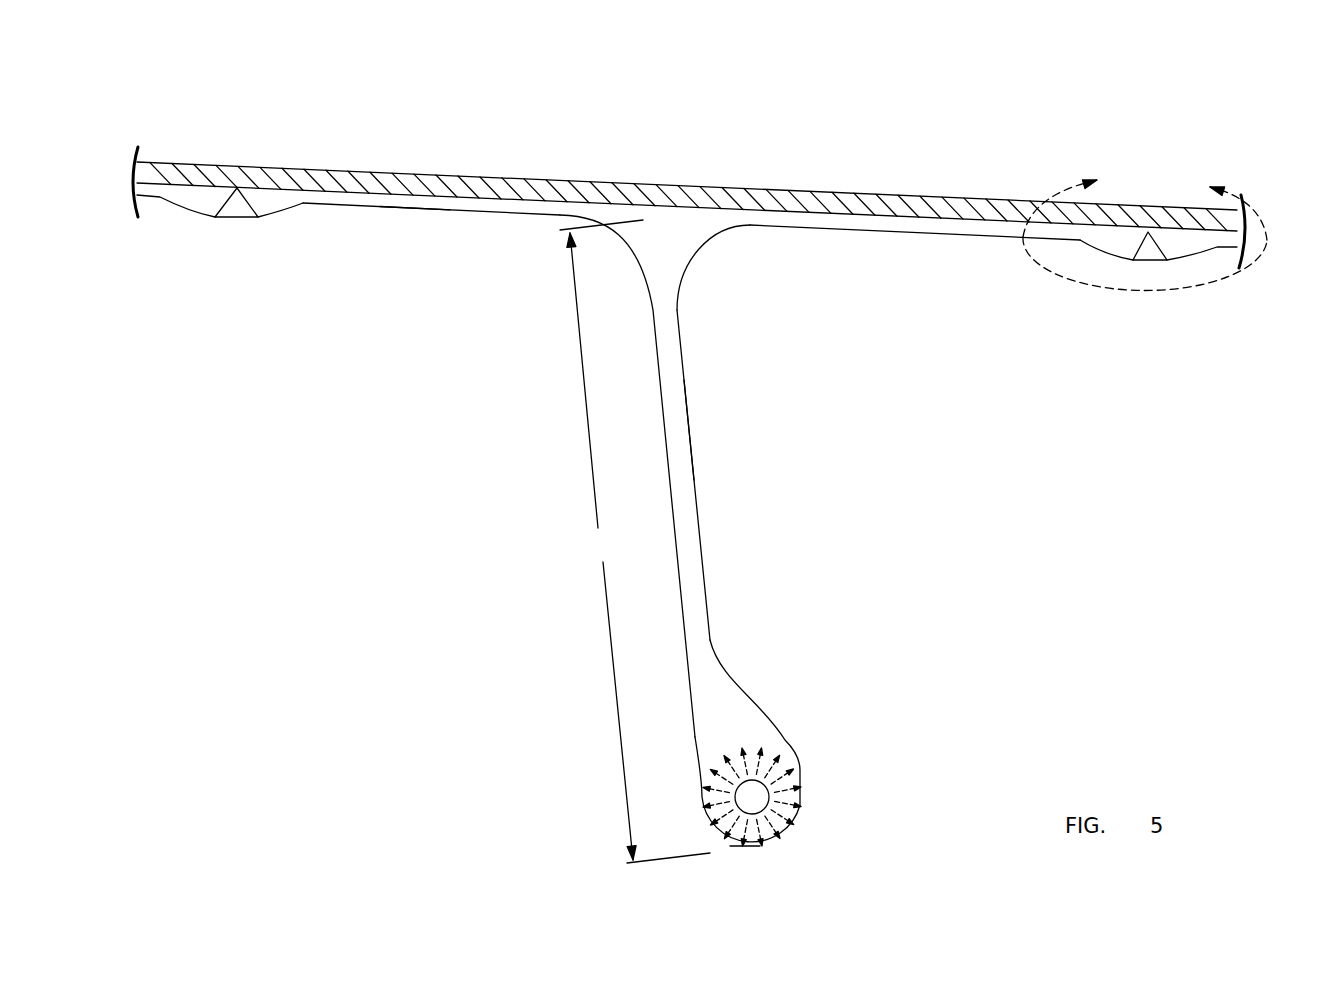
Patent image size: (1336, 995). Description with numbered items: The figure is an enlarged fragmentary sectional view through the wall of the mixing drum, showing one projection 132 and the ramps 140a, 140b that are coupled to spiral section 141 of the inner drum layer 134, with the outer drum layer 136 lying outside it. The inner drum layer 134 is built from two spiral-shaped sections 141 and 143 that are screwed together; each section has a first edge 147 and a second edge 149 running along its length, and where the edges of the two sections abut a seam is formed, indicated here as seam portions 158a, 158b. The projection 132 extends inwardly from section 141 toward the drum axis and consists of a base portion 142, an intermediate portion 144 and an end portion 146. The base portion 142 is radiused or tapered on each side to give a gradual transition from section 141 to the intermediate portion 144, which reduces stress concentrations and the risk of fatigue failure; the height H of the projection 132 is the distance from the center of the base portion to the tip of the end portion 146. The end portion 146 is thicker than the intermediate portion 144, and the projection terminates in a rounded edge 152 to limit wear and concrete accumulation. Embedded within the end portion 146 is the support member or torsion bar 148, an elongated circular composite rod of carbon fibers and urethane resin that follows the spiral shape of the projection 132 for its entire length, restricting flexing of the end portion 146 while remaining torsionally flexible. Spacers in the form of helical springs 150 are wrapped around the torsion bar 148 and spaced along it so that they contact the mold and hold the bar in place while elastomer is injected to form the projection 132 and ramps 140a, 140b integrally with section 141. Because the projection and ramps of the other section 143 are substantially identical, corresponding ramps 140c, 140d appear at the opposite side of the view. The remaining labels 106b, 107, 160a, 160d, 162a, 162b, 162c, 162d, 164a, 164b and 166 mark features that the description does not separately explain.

The second panel portion 106b is at (1087, 247).
The direction of rotation 107 is at (1145, 222).
The projection 132 is at (702, 517).
The inner drum layer 134 is at (482, 212).
The outer drum layer 136 is at (393, 178).
The ramp 140a is at (260, 217).
The ramp 140b is at (1113, 247).
The third locking surface 140c is at (205, 207).
The fourth locking surface 140d is at (1177, 253).
The spiral-shaped section 141 is at (412, 208).
The base portion 142 is at (698, 250).
The spiral-shaped section 143 is at (148, 200).
The intermediate portion 144 is at (692, 452).
The end portion 146 is at (800, 768).
The first edge 147 is at (237, 186).
The support member (torsion bar) 148 is at (755, 802).
The second edge 149 is at (192, 160).
The spacers (helical springs) 150 is at (738, 843).
The rounded edge 152 is at (760, 850).
The first locking recess 158a is at (237, 186).
The second locking recess 158b is at (1147, 230).
The first recess wall 160a is at (280, 217).
The second recess wall 160d is at (1190, 258).
The first engagement surface 162a is at (247, 213).
The second engagement surface 162b is at (1140, 260).
The third engagement surface 162c is at (223, 217).
The fourth engagement surface 162d is at (1155, 256).
The first tab 164a is at (205, 170).
The second tab 164b is at (1150, 232).
The locking projection 166 is at (236, 217).
The height H is at (635, 541).